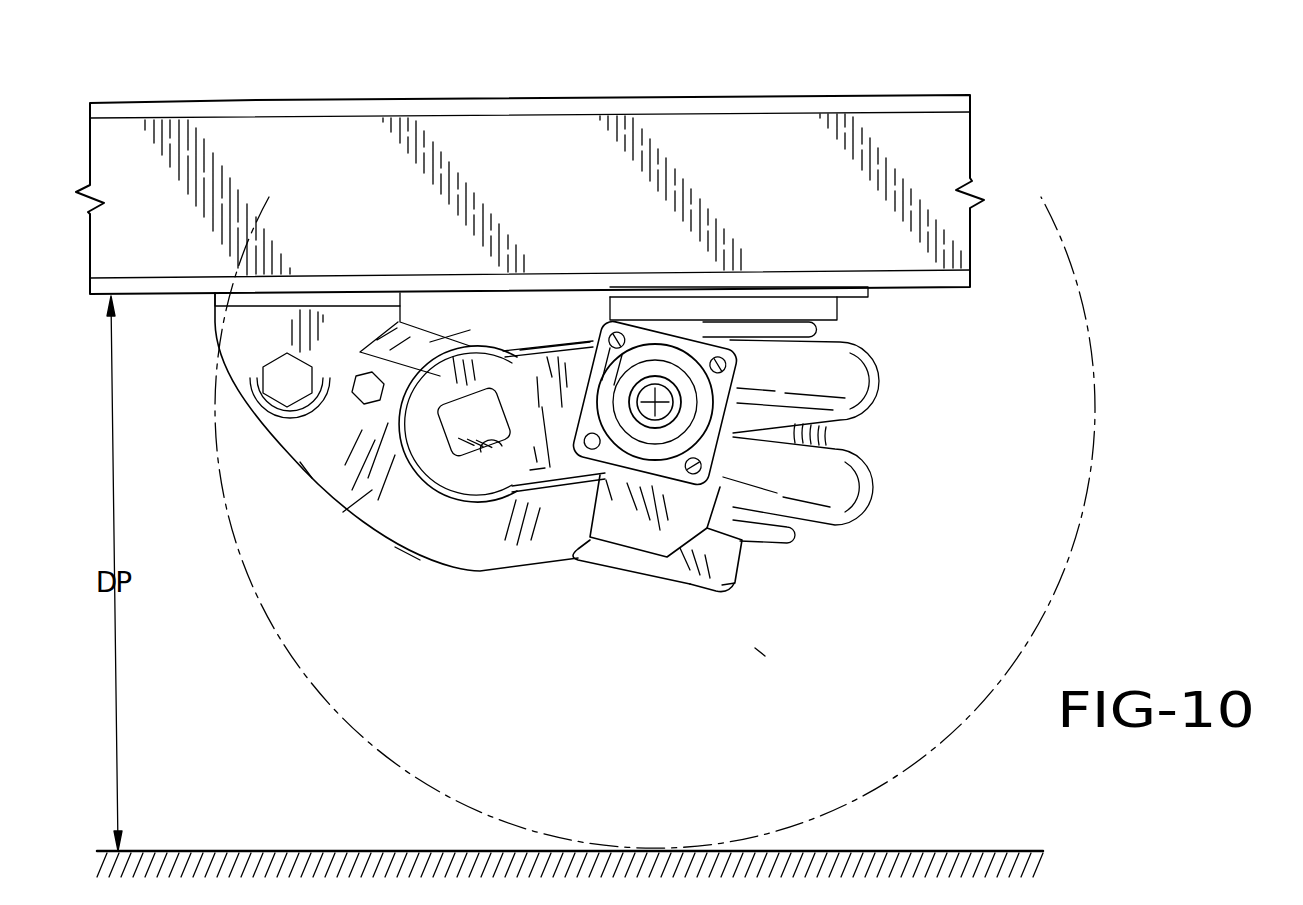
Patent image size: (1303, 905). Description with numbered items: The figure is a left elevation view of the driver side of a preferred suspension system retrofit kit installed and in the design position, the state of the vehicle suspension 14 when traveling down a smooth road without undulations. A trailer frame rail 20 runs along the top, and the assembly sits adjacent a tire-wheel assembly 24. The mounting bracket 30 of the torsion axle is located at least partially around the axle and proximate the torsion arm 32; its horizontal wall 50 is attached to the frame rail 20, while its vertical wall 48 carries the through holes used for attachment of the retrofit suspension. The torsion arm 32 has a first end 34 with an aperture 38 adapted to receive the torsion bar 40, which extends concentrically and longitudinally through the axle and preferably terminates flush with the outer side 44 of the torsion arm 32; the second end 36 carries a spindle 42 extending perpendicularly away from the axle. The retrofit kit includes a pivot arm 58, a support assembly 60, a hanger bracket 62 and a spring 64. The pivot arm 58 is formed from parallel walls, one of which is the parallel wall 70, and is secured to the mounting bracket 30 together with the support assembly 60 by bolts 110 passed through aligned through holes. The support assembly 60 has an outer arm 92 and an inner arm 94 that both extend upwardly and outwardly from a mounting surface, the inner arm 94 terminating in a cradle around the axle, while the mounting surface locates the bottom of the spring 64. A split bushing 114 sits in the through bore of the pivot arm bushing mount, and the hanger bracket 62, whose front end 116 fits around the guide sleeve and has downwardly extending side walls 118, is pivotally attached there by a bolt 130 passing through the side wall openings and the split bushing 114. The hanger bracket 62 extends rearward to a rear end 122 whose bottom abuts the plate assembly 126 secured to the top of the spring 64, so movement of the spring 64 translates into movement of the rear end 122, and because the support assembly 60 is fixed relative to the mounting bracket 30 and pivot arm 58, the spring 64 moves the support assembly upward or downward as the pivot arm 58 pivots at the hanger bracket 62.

The vehicle suspension 14 is at (814, 678).
The frame rail 20 is at (256, 100).
The tire-wheel assembly 24 is at (945, 760).
The mounting bracket 30 is at (418, 310).
The torsion arm 32 is at (550, 322).
The first end 34 is at (400, 483).
The second end 36 is at (695, 320).
The aperture 38 is at (488, 450).
The torsion bar 40 is at (443, 450).
The spindle 42 is at (627, 393).
The outer side 44 is at (538, 465).
The vertical wall 48 is at (673, 530).
The horizontal wall 50 is at (436, 337).
The pivot arm 58 is at (408, 572).
The support assembly 60 is at (752, 596).
The hanger bracket 62 is at (876, 314).
The spring 64 is at (878, 530).
The parallel wall 70 is at (357, 507).
The outer arm 92 is at (725, 553).
The inner arm 94 is at (618, 556).
The bolt 110 is at (365, 380).
The split bushing 114 is at (311, 416).
The front end 116 is at (212, 301).
The side wall 118 is at (250, 352).
The rear end 122 is at (850, 287).
The plate assembly 126 is at (776, 310).
The bolt 130 is at (278, 388).